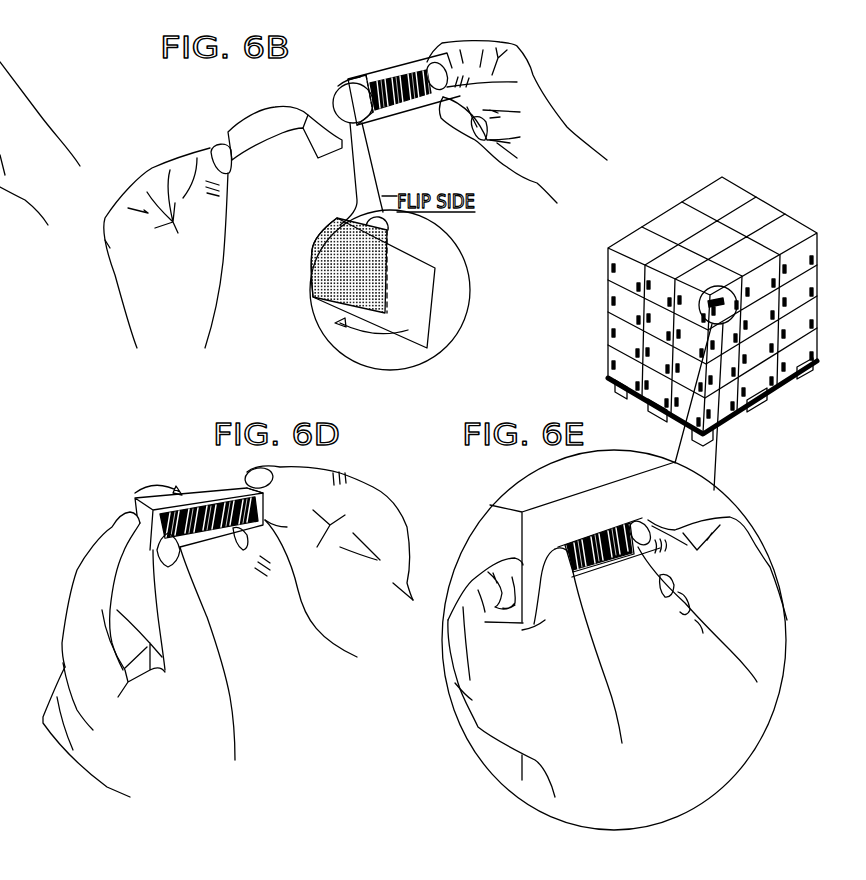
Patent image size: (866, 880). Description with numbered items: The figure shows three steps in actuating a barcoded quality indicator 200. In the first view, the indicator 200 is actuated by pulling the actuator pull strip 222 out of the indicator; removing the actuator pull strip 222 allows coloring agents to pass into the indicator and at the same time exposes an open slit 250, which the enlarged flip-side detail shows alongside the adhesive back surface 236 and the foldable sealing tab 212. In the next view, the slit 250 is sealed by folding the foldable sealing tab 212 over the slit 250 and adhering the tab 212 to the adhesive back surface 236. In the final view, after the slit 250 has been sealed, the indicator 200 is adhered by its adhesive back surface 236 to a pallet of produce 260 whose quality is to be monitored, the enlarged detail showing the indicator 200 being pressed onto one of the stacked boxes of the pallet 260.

In FIG. 6B, the barcoded quality indicator 200 is at (418, 112).
In FIG. 6D, the barcoded quality indicator 200 is at (203, 558).
In FIG. 6E, the barcoded quality indicator 200 is at (591, 582).
In FIG. 6B, the foldable sealing tab 212 is at (362, 88).
In FIG. 6D, the foldable sealing tab 212 is at (135, 505).
In FIG. 6B, the actuator pull strip 222 is at (252, 141).
In FIG. 6B, the adhesive back surface 236 is at (336, 286).
In FIG. 6D, the adhesive back surface 236 is at (260, 488).
In FIG. 6B, the slit 250 is at (386, 278).
In FIG. 6E, the pallet of produce 260 is at (740, 168).